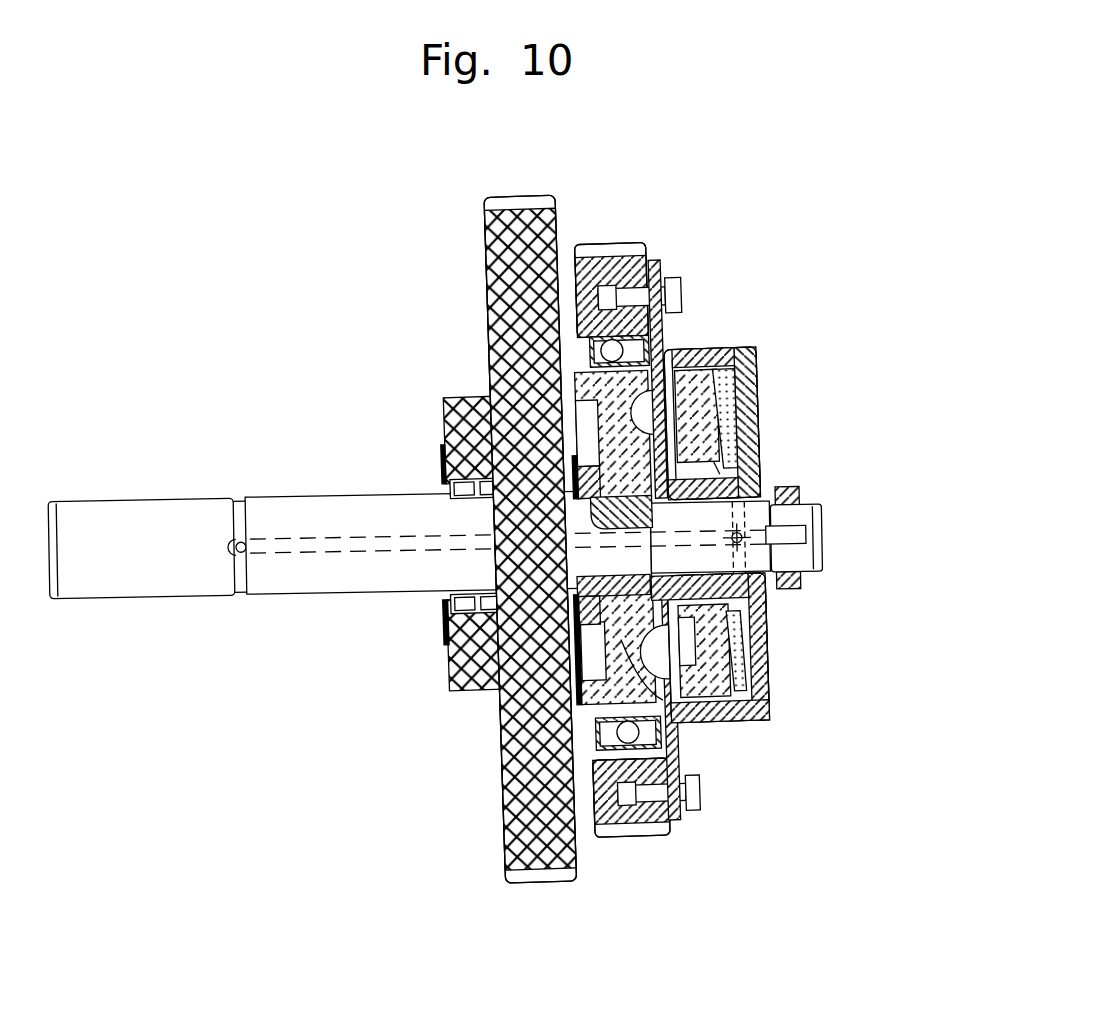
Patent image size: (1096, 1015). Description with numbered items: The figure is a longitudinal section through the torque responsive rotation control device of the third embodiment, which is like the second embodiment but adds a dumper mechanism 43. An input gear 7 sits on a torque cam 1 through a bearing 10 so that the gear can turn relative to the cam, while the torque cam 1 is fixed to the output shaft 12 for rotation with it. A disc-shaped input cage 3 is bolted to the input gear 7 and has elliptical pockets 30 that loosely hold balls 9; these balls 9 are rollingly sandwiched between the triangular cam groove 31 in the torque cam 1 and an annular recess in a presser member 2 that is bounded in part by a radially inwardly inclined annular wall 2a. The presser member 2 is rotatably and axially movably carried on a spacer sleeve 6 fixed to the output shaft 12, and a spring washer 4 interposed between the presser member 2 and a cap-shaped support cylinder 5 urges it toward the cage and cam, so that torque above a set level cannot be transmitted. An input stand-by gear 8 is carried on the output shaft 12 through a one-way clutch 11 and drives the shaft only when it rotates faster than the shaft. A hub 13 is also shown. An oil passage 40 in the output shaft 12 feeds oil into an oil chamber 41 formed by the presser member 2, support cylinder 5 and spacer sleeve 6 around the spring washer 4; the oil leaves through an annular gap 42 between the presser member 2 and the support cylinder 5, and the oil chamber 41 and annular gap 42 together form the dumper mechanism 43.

The torque cam 1 is at (660, 690).
The presser member 2 is at (717, 720).
The radially inwardly inclined annular wall 2a is at (770, 465).
The input cage 3 is at (670, 337).
The spring washer 4 is at (768, 660).
The support cylinder 5 is at (770, 390).
The spacer sleeve 6 is at (768, 600).
The input gear 7 is at (610, 250).
The input stand-by gear 8 is at (530, 347).
The balls 9 is at (713, 725).
The bearing 10 is at (697, 290).
The one-way clutch 11 is at (507, 597).
The output shaft 12 is at (143, 530).
The hub sleeve 13 is at (547, 450).
The pockets 30 is at (667, 655).
The cam groove 31 is at (693, 353).
The oil passage 40 is at (393, 553).
The oil chamber 41 is at (765, 440).
The annular gap 42 is at (737, 347).
The dumper mechanism 43 is at (768, 710).